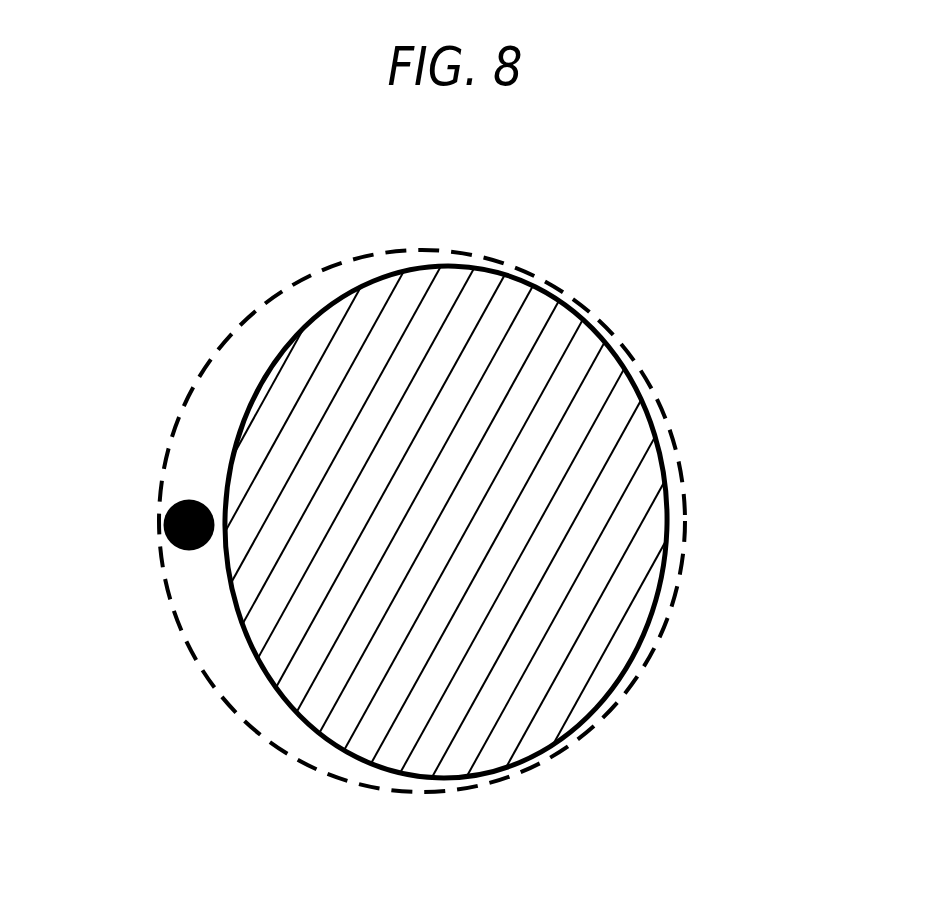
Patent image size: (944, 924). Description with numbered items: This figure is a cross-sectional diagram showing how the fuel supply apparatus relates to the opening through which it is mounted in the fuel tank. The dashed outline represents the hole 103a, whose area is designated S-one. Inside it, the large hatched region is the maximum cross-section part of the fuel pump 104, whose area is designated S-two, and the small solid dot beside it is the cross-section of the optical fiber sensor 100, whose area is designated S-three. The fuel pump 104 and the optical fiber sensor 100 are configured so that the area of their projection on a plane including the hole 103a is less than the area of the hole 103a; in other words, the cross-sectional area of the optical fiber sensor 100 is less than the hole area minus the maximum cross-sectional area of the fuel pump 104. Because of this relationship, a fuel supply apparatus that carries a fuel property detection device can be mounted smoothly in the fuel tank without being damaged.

The hole 103a is at (243, 320).
The fuel pump 104 is at (547, 415).
The optical fiber sensor 100 is at (170, 545).